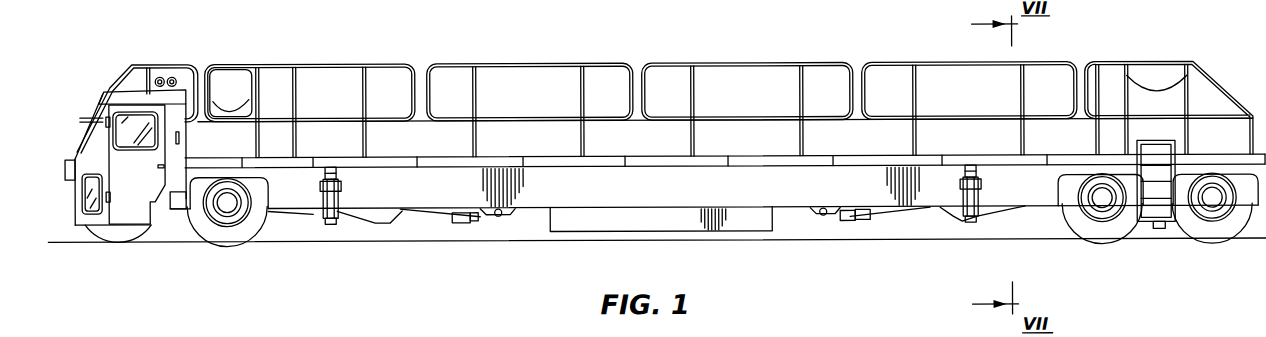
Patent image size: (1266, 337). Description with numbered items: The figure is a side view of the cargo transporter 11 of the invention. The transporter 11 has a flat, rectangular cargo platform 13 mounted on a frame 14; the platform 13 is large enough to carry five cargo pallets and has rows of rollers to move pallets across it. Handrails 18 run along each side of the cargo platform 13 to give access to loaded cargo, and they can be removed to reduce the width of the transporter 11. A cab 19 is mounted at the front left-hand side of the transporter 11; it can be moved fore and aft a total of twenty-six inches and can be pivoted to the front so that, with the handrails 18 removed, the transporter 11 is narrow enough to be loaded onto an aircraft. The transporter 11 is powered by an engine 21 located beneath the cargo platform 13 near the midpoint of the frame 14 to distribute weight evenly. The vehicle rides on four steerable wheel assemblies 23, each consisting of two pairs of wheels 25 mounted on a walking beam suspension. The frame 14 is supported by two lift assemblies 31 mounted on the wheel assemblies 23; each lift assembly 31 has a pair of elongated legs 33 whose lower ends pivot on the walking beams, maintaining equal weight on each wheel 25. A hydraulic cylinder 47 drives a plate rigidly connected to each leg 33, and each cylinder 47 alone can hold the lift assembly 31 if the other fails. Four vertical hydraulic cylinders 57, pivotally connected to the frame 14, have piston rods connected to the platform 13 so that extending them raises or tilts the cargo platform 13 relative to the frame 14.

The cargo transporter 11 is at (424, 52).
The cargo platform 13 is at (535, 155).
The frame 14 is at (541, 193).
The handrails 18 is at (748, 64).
The cab 19 is at (137, 217).
The engine 21 is at (749, 225).
The wheel assemblies 23 is at (182, 255).
The wheels 25 is at (107, 245).
The lift assemblies 31 is at (400, 224).
The elongated legs 33 is at (360, 214).
The hydraulic cylinder 47 is at (443, 214).
The vertical hydraulic cylinders 57 is at (318, 212).